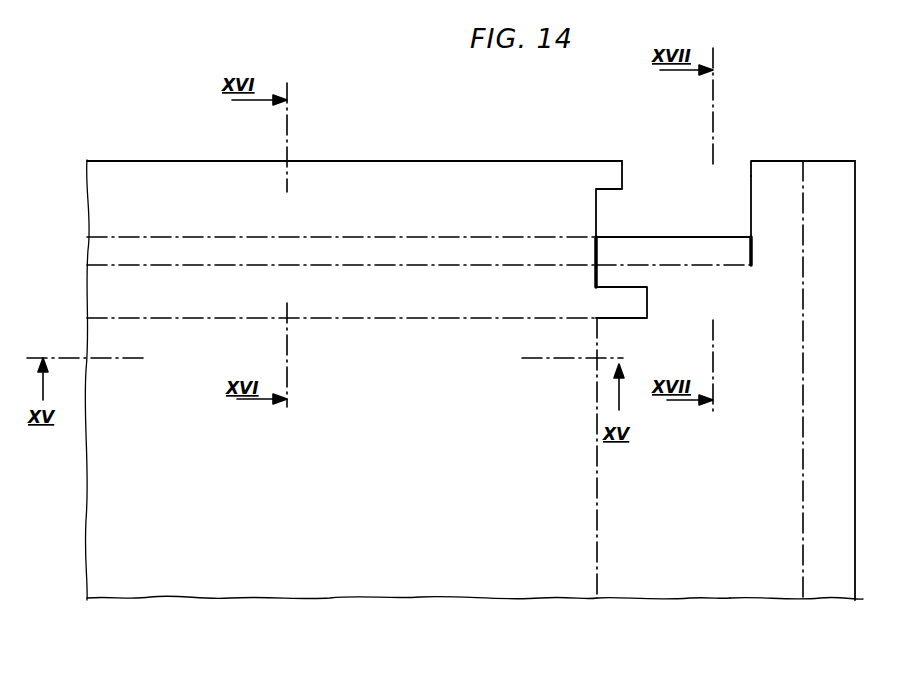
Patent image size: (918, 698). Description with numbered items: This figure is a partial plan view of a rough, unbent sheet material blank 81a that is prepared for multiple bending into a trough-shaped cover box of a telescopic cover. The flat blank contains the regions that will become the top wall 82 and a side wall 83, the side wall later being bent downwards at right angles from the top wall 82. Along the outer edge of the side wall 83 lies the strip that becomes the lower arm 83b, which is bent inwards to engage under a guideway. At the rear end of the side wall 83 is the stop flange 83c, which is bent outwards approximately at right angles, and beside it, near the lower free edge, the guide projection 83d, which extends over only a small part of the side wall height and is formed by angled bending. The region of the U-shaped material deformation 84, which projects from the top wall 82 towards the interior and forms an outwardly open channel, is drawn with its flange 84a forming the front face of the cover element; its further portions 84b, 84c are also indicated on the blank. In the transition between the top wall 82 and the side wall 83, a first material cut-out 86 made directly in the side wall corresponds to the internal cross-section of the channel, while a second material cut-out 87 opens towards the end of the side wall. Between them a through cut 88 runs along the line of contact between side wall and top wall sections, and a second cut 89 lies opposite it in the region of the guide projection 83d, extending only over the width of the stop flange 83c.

The sheet material blank 81a is at (328, 541).
The top wall 82 is at (515, 540).
The side wall 83 is at (718, 560).
The lower arm 83b is at (830, 573).
The stop flange 83c is at (678, 250).
The guide projection 83d is at (822, 180).
The U-shaped material deformation 84 is at (348, 232).
The flange 84a is at (452, 193).
The lower portion of slide member 84b is at (390, 288).
The channel of slide member 84c is at (196, 252).
The first material cut-out 86 is at (646, 305).
The second material cut-out 87 is at (751, 176).
The through cut 88 is at (600, 252).
The second cut 89 is at (742, 262).